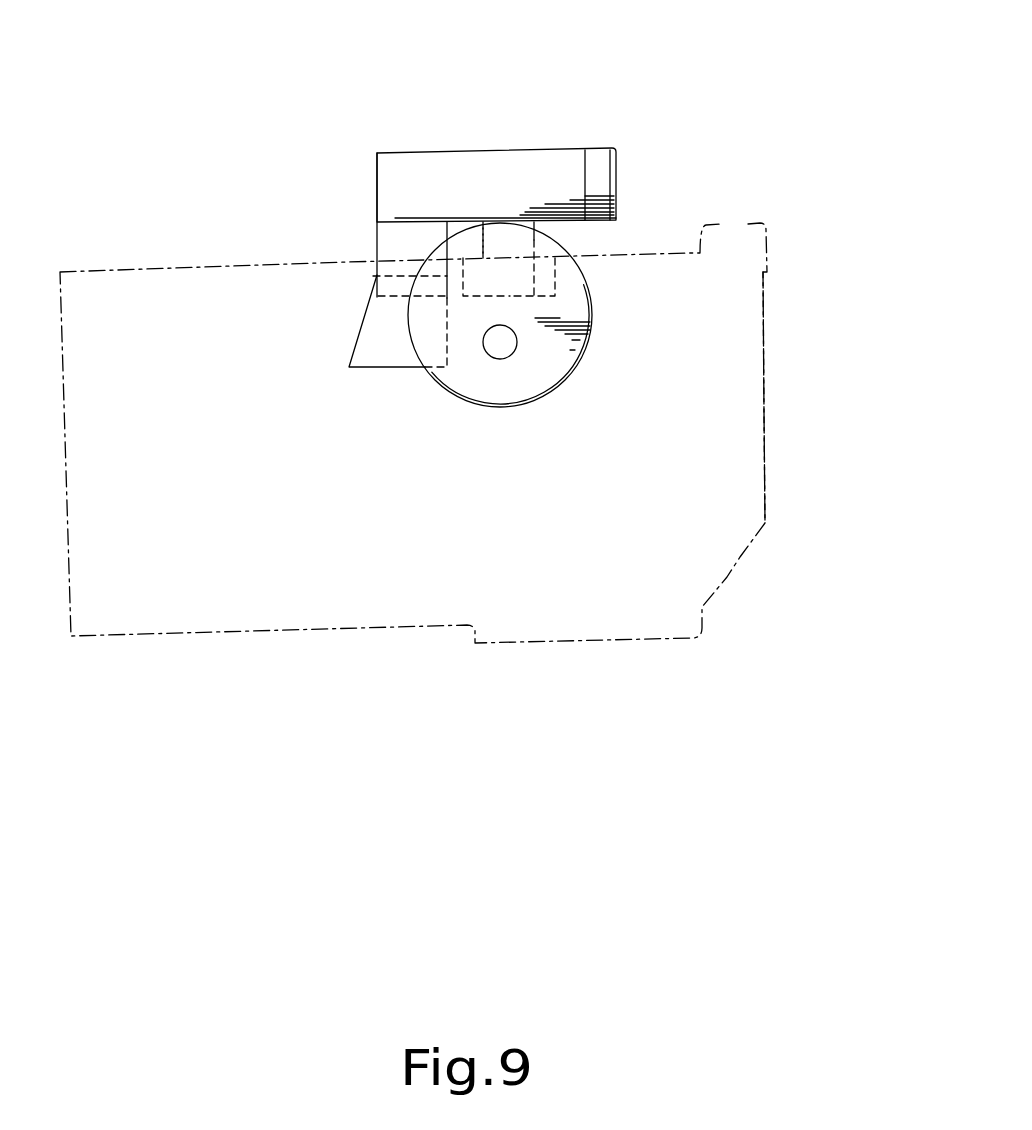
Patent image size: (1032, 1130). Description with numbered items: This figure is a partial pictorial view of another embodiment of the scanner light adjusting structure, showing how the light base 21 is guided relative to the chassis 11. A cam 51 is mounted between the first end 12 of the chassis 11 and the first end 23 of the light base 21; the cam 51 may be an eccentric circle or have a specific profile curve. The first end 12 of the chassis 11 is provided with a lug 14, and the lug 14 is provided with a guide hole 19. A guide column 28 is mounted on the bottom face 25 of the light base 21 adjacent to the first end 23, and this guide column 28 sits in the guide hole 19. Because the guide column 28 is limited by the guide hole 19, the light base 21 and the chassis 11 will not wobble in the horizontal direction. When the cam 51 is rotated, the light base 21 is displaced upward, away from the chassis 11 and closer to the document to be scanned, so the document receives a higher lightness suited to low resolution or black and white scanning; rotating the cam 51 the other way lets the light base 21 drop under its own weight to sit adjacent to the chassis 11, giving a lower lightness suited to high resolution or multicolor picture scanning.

The chassis 11 is at (812, 292).
The first end of the chassis 12 is at (758, 400).
The lug 14 is at (567, 282).
The guide hole 19 is at (483, 258).
The light base 21 is at (509, 113).
The first end of the light base 23 is at (392, 188).
The bottom face of the light base 25 is at (585, 180).
The guide column 28 is at (480, 228).
The cam 51 is at (548, 367).